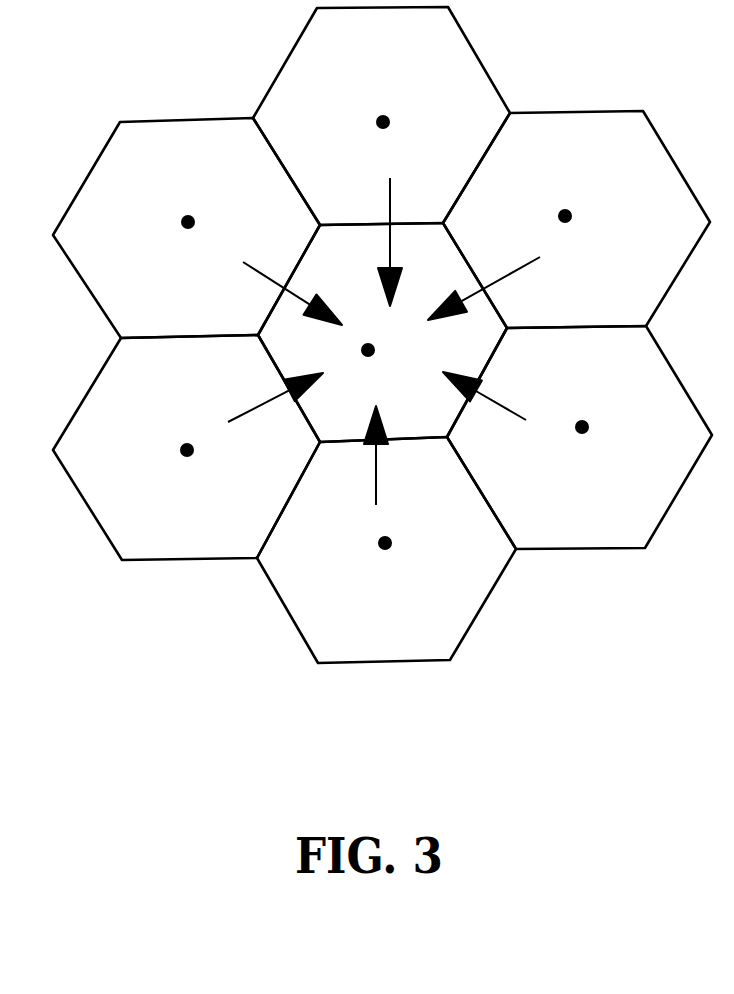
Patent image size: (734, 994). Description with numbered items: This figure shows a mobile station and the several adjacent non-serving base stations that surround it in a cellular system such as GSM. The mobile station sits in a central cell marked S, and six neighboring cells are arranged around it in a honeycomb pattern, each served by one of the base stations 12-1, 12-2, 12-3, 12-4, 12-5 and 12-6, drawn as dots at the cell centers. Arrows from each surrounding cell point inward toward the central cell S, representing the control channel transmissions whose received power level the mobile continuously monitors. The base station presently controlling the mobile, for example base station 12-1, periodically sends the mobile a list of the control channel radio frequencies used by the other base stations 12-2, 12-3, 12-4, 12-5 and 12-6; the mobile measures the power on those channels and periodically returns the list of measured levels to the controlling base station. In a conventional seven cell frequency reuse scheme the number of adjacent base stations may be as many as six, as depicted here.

The base station 12-1 is at (197, 228).
The base station 12-2 is at (381, 156).
The base station 12-3 is at (569, 219).
The base station 12-4 is at (577, 437).
The base station 12-5 is at (386, 534).
The base station 12-6 is at (188, 447).
The serving cell / mobile station S is at (382, 332).